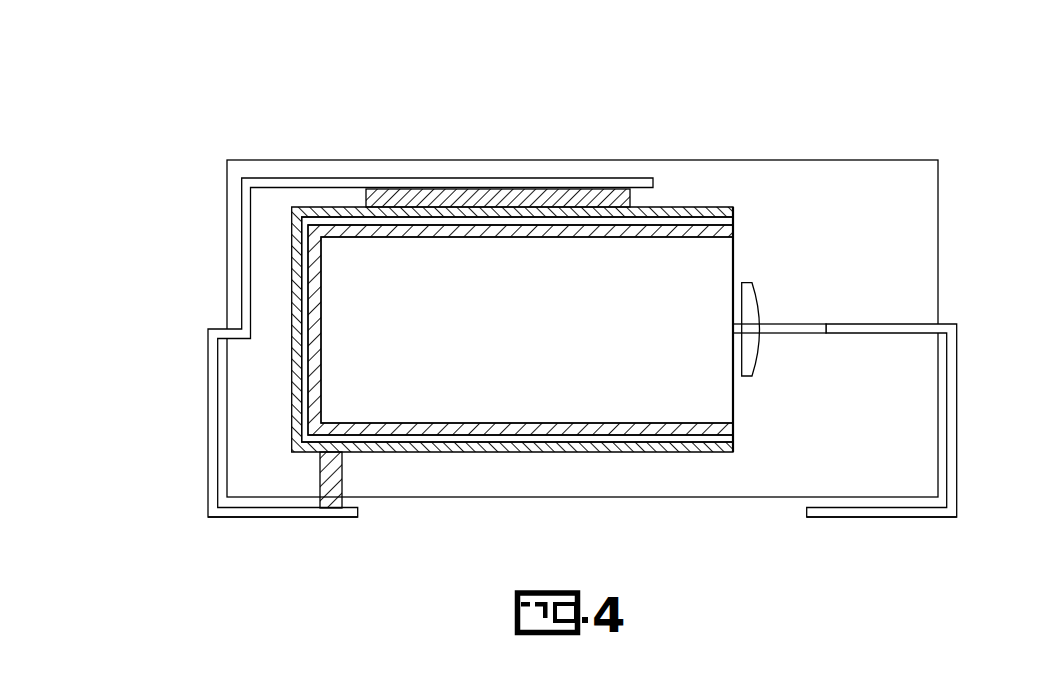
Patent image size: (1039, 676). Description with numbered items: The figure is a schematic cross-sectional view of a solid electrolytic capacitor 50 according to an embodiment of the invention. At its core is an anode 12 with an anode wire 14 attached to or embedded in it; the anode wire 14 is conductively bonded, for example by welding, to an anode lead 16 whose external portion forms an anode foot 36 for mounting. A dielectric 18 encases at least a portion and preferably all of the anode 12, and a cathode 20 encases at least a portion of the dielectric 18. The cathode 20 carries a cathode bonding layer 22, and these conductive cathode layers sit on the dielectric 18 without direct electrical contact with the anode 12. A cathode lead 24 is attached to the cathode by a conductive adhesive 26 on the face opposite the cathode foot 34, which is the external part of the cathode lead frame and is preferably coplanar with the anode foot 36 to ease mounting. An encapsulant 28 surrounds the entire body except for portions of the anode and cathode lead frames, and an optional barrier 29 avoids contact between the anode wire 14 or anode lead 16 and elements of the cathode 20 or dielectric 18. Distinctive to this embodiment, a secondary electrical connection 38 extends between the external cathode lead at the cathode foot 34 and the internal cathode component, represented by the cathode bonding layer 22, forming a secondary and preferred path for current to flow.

The anode 12 is at (522, 350).
The anode lead wire 14 is at (790, 323).
The anode leadframe 16 is at (957, 397).
The dielectric 18 is at (707, 231).
The cathode 20 is at (670, 221).
The cathode bonding layer 22 is at (333, 210).
The cathode lead 24 is at (208, 438).
The conductive adhesive 26 is at (530, 200).
The encapsulant 28 is at (910, 200).
The barrier 29 is at (749, 355).
The cathode foot 34 is at (263, 517).
The anode foot 36 is at (857, 517).
The secondary electrical connection 38 is at (335, 480).
The solid electrolytic capacitor 50 is at (470, 130).